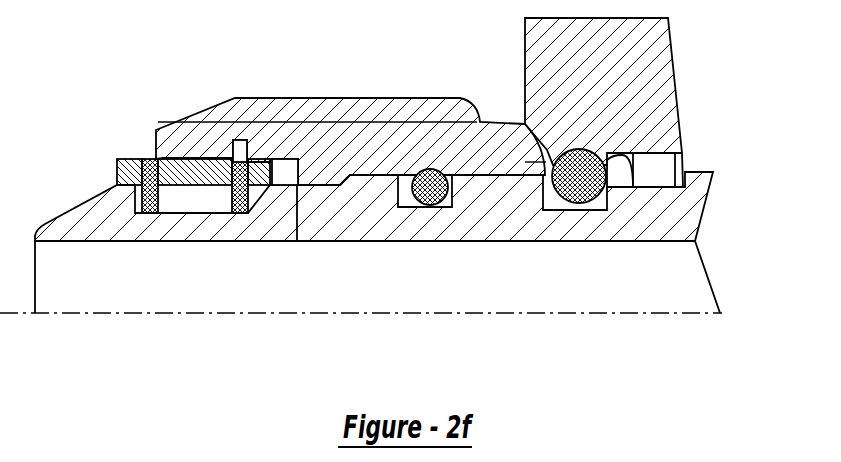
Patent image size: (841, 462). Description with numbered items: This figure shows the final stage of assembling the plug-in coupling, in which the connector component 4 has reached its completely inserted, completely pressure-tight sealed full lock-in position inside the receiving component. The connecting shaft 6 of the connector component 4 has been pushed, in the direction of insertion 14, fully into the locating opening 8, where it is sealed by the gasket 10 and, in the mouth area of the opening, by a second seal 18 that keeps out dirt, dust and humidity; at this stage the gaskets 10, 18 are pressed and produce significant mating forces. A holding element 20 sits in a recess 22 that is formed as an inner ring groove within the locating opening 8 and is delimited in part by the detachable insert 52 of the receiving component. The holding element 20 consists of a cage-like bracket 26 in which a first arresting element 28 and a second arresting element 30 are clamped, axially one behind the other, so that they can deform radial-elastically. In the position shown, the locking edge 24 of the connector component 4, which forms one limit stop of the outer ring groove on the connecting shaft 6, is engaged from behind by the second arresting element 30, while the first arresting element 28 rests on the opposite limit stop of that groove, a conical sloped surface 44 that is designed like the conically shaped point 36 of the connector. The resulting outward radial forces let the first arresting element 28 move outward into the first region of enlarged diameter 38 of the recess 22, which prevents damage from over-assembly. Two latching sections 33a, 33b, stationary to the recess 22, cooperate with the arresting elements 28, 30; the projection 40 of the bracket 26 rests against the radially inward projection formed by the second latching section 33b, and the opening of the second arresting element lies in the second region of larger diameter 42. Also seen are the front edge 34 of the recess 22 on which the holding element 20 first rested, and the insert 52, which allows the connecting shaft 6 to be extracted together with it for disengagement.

The connector component 4 is at (708, 159).
The connecting shaft 6 is at (705, 207).
The locating opening 8 is at (525, 125).
The gasket 10 is at (437, 207).
The direction of insertion 14 is at (693, 313).
The second seal 18 is at (598, 150).
The holding element 20 is at (106, 178).
The recess 22 is at (140, 332).
The locking edge 24 is at (140, 213).
The cage-like bracket 26 is at (118, 170).
The first arresting element 28 is at (250, 212).
The second arresting element 30 is at (152, 159).
The first latching section 33a is at (285, 128).
The second latching section 33b is at (182, 158).
The front edge 34 is at (303, 184).
The conically designed point 36 is at (82, 241).
The first region of enlarged diameter 38 is at (276, 159).
The projection 40 is at (243, 142).
The second region of larger diameter 42 is at (117, 159).
The conical sloped surface 44 is at (296, 192).
The insert 52 is at (663, 55).